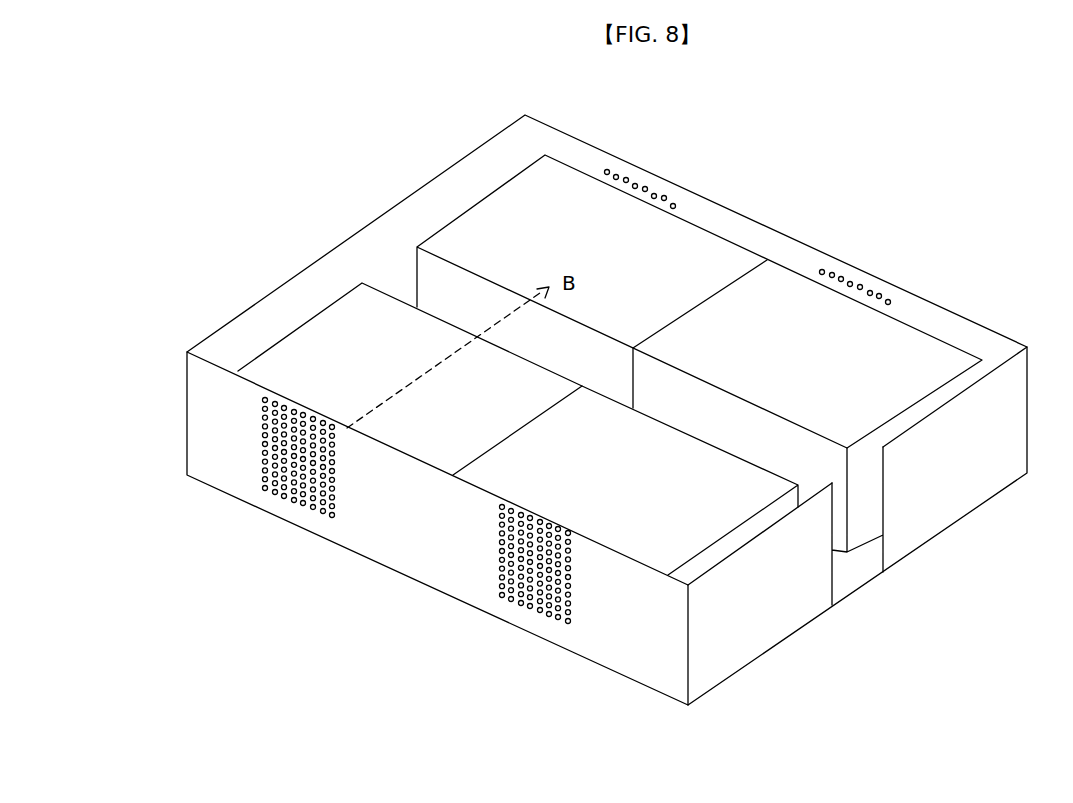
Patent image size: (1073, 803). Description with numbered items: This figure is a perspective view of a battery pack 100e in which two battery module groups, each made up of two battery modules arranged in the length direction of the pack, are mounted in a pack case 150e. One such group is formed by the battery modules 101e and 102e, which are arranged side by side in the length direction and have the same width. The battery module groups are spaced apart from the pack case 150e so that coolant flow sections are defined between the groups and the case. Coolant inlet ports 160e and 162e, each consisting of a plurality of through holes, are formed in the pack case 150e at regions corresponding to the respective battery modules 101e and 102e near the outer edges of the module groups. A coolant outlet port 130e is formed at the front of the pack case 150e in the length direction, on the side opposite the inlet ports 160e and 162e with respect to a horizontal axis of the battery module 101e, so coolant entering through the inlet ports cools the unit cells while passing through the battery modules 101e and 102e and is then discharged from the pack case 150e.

The battery pack 100e is at (286, 153).
The battery module 101e is at (373, 356).
The battery module 102e is at (643, 478).
The coolant outlet port 130e is at (860, 582).
The pack case 150e is at (710, 200).
The coolant inlet port 160e is at (291, 500).
The coolant inlet port 162e is at (530, 612).